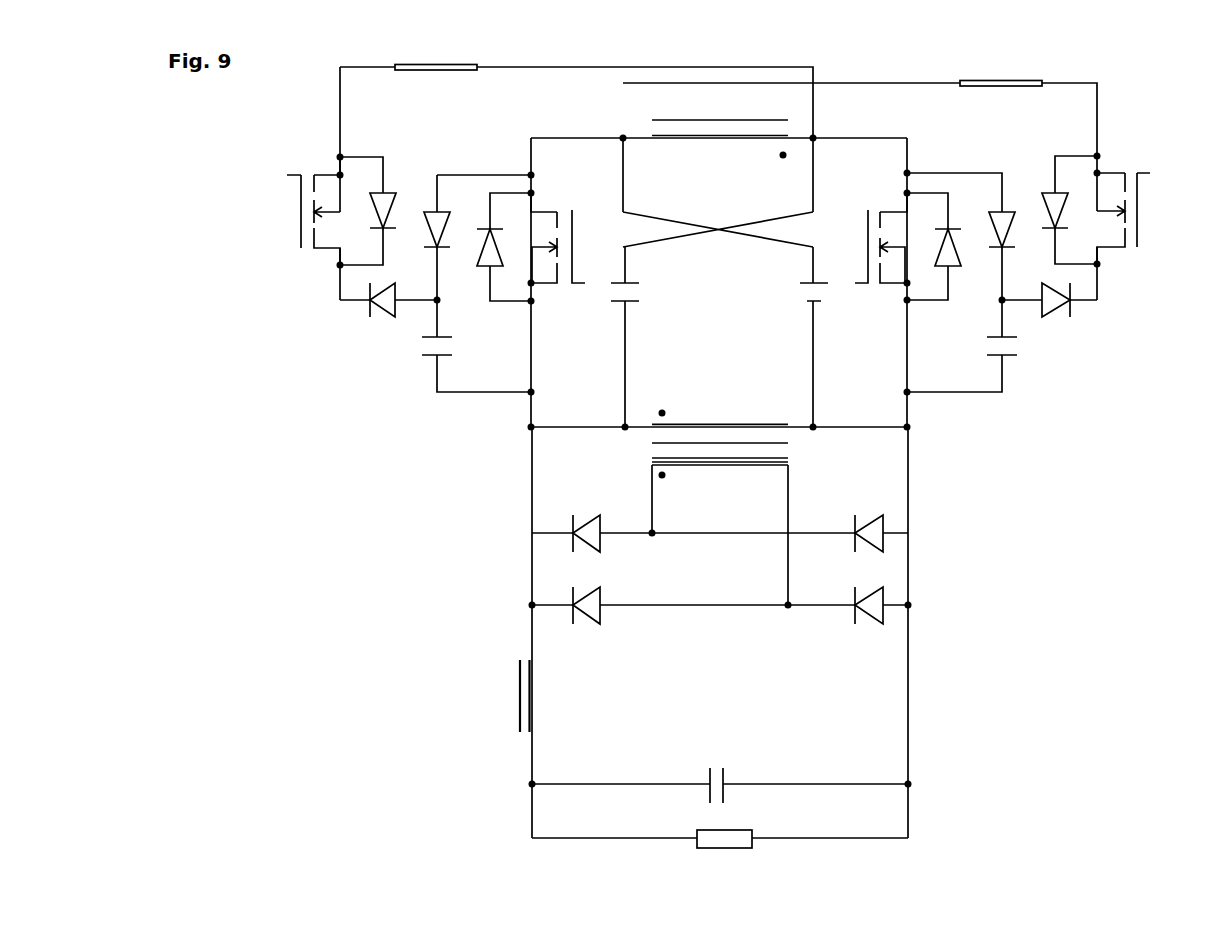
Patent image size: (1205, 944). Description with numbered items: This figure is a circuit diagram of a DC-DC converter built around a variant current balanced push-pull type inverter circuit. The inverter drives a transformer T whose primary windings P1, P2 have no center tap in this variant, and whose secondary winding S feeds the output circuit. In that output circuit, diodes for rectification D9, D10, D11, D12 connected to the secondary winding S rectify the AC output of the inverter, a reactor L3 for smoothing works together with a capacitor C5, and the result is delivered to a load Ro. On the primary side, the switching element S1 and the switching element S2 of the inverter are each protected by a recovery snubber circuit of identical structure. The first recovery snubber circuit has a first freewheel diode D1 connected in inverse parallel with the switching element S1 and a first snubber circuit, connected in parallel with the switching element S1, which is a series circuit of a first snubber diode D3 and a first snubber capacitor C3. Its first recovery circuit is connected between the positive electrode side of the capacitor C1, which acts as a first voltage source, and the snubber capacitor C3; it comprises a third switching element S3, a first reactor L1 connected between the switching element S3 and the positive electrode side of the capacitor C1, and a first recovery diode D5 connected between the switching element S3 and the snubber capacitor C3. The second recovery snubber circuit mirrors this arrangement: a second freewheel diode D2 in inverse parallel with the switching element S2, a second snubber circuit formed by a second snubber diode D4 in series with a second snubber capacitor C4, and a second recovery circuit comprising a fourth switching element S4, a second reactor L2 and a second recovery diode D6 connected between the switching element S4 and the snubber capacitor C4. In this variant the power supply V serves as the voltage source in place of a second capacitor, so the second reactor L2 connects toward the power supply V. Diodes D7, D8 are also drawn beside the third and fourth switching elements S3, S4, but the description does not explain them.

The first reactor L1 is at (436, 54).
The second reactor L2 is at (1001, 62).
The reactor for smoothing L3 is at (501, 696).
The first freewheel diode D1 is at (504, 223).
The second freewheel diode D2 is at (934, 223).
The first snubber diode D3 is at (475, 223).
The second snubber diode D4 is at (963, 223).
The first recovery diode D5 is at (388, 316).
The second recovery diode D6 is at (1049, 316).
The seventh diode D7 is at (368, 188).
The eighth diode D8 is at (1069, 186).
The diode for rectification D9 is at (592, 541).
The diode for rectification D10 is at (780, 541).
The diode for rectification D11 is at (660, 613).
The diode for rectification D12 is at (848, 613).
The switching element S1 is at (568, 238).
The switching element S2 is at (867, 238).
The third switching element S3 is at (297, 211).
The fourth switching element S4 is at (1141, 218).
The capacitor C1 is at (642, 337).
The first snubber capacitor C3 is at (476, 346).
The second snubber capacitor C4 is at (962, 346).
The capacitor C5 is at (720, 779).
The power supply V is at (795, 337).
The primary winding P1 is at (720, 145).
The primary winding P2 is at (720, 413).
The secondary winding S is at (720, 533).
The transformer T is at (702, 446).
The load Ro is at (720, 858).